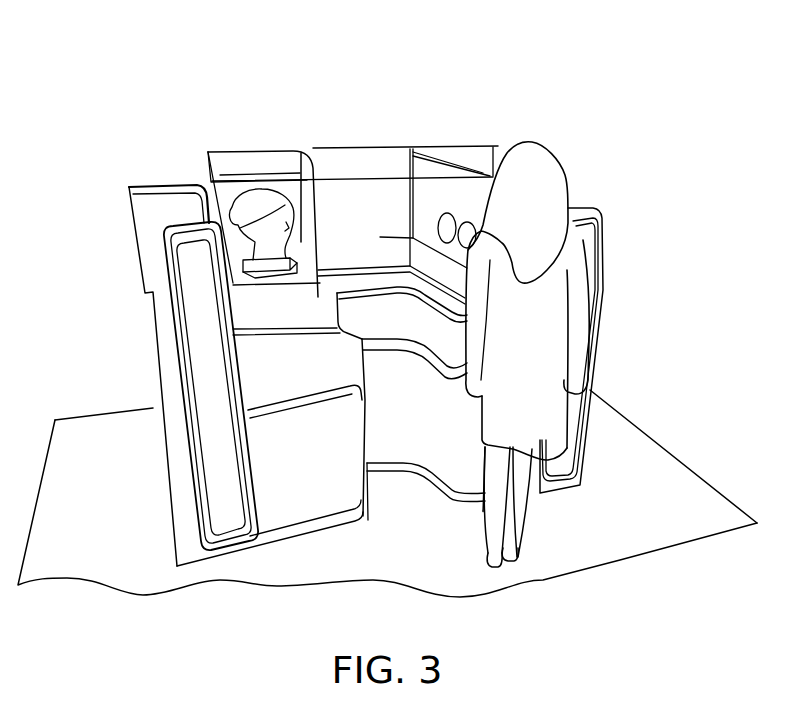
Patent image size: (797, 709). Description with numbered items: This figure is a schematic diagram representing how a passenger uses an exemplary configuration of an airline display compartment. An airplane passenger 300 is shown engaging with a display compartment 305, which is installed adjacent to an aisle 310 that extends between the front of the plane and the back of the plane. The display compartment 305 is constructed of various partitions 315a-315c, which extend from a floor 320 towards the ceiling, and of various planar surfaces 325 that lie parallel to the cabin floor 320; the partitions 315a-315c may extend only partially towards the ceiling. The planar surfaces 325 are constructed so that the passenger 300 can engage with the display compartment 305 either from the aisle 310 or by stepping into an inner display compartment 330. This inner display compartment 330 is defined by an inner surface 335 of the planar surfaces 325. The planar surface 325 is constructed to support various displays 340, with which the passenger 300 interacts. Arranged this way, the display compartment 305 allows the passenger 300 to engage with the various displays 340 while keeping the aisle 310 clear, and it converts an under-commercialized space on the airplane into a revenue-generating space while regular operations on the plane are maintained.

The airplane passenger 300 is at (540, 333).
The display compartment 305 is at (526, 118).
The aisle 310 is at (675, 513).
The partitions 315a-315c is at (522, 133).
The floor 320 is at (310, 575).
The planar surfaces 325 is at (332, 312).
The inner display compartment 330 is at (388, 487).
The inner surface 335 is at (433, 413).
The displays 340 is at (242, 254).